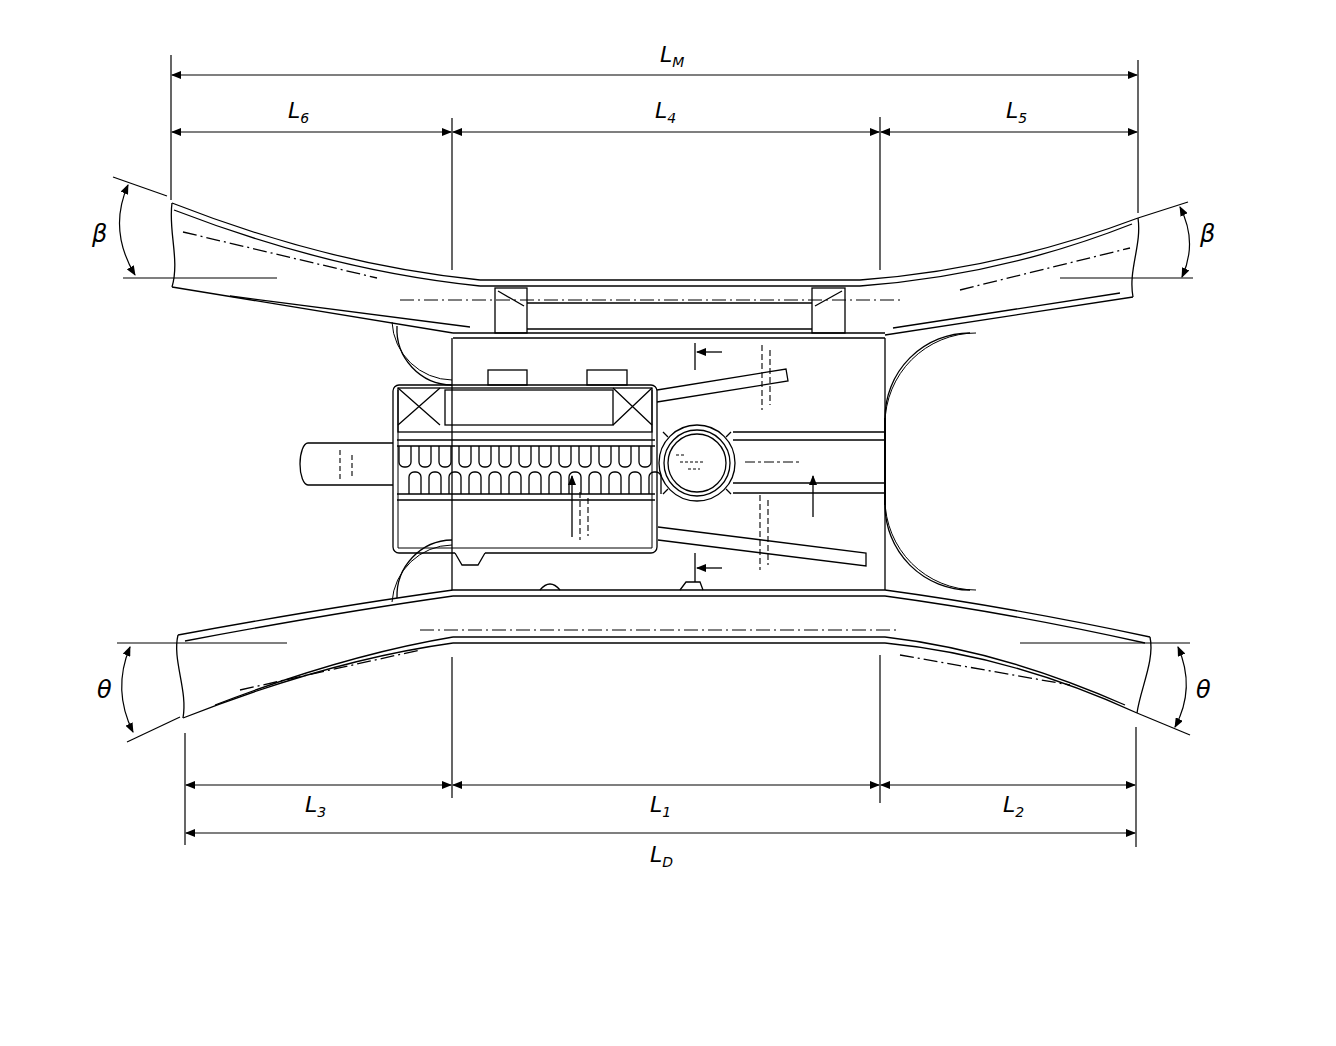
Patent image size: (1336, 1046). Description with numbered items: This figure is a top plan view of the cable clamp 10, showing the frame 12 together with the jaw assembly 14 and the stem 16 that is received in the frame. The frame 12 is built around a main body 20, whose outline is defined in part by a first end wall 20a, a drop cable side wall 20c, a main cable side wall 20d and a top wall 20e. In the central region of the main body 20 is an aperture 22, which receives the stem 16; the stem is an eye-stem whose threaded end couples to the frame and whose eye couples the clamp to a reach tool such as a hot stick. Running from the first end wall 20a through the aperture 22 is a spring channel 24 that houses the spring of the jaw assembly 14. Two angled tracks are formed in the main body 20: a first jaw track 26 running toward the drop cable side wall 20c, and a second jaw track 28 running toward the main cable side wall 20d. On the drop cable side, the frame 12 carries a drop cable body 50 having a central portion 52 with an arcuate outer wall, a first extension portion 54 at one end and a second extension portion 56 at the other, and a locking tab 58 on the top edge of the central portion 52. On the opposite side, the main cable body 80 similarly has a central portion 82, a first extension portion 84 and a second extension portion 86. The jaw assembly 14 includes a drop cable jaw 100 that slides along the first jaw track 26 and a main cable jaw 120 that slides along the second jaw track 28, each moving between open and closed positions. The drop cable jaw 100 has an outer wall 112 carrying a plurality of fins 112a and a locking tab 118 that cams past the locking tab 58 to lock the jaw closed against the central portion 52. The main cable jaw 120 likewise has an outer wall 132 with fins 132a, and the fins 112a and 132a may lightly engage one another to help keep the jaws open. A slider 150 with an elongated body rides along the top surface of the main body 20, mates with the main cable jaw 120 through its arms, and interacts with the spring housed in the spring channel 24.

The clamp 10 is at (1193, 148).
The frame 12 is at (618, 253).
The jaw assembly 14 is at (338, 532).
The stem 16 is at (700, 480).
The main body 20 is at (887, 412).
The first end wall 20a is at (887, 508).
The drop cable side wall 20c is at (548, 586).
The main cable side wall 20d is at (780, 345).
The top wall 20e is at (870, 535).
The aperture 22 is at (703, 430).
The spring channel 24 is at (875, 463).
The first jaw track 26 is at (826, 562).
The second jaw track 28 is at (735, 385).
The drop cable body 50 is at (580, 648).
The central portion 52 is at (762, 645).
The first extension portion 54 is at (1100, 625).
The second extension portion 56 is at (205, 628).
The locking tab 58 is at (690, 592).
The main cable body 80 is at (516, 284).
The central portion 82 is at (660, 280).
The first extension portion 84 is at (1097, 305).
The second extension portion 86 is at (225, 297).
The drop cable jaw 100 is at (388, 538).
The outer wall 112 is at (393, 487).
The fins 112a is at (430, 494).
The locking tab 118 is at (476, 566).
The main cable jaw 120 is at (398, 383).
The outer wall 132 is at (393, 460).
The fins 132a is at (393, 398).
The slider 150 is at (292, 464).